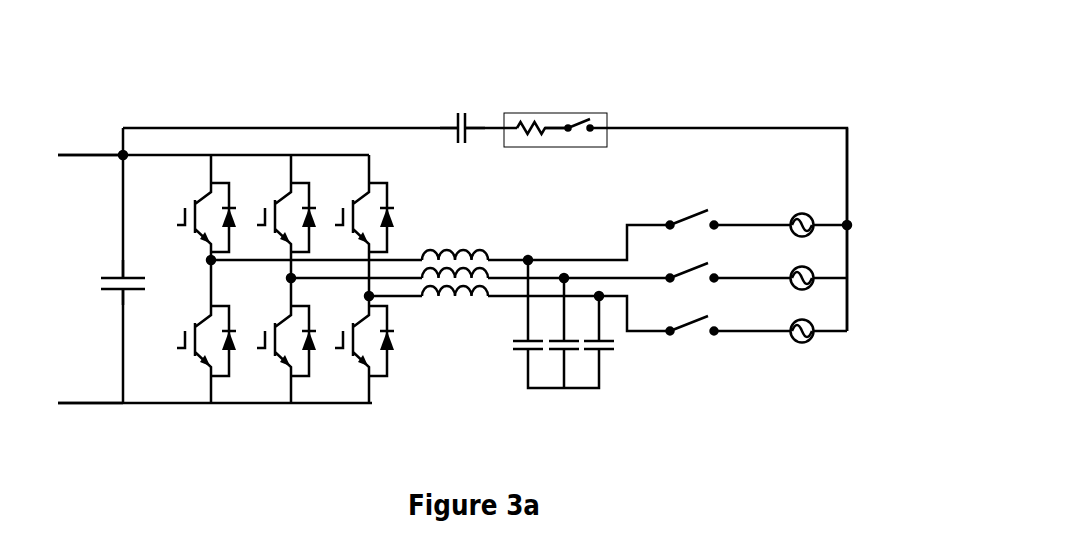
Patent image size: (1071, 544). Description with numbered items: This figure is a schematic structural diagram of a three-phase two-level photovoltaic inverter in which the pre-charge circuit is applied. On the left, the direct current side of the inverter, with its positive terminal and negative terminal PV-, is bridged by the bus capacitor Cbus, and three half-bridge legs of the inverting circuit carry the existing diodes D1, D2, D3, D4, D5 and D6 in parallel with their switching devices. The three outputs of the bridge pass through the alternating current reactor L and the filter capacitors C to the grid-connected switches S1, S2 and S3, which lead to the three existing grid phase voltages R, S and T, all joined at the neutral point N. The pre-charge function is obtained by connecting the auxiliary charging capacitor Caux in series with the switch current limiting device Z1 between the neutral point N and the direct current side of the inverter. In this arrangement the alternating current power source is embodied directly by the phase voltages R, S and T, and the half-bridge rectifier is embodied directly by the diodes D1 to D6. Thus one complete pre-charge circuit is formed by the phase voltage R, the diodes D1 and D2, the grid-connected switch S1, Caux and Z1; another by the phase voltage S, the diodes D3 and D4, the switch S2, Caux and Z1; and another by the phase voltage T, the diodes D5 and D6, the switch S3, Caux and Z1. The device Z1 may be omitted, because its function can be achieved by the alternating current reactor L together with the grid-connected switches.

The direct current side negative terminal PV- is at (90, 389).
The bus capacitor Cbus is at (110, 279).
The diode D1 is at (237, 215).
The diode D2 is at (236, 340).
The diode D3 is at (314, 215).
The diode D4 is at (313, 340).
The diode D5 is at (394, 215).
The diode D6 is at (393, 340).
The alternating current reactor L is at (455, 265).
The filter capacitor C is at (559, 322).
The auxiliary charging capacitor Caux is at (446, 122).
The switch current limiting device Z1 is at (555, 141).
The grid-connected switch S1 is at (720, 215).
The grid-connected switch S2 is at (720, 269).
The grid-connected switch S3 is at (720, 323).
The phase voltage R is at (819, 213).
The phase voltage S is at (819, 267).
The phase voltage T is at (819, 320).
The neutral point N is at (857, 229).